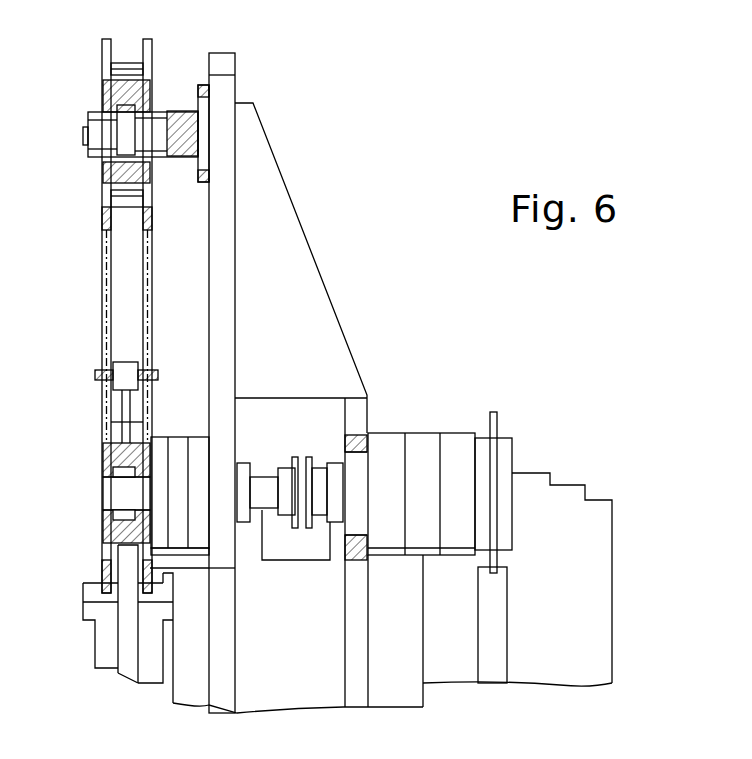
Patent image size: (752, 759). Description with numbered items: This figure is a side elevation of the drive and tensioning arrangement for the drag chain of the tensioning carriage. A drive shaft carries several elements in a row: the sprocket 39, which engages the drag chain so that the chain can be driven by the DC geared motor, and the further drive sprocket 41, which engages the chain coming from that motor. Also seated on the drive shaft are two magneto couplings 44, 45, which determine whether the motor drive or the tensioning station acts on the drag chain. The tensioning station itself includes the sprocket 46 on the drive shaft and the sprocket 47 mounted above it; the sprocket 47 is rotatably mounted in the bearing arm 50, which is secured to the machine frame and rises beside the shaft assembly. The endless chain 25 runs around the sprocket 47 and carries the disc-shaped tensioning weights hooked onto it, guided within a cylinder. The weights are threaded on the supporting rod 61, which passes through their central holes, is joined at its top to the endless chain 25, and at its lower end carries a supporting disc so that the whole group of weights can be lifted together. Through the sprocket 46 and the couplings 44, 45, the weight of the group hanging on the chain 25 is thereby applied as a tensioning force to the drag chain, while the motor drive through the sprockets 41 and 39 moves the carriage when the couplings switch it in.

The endless chain 25 is at (105, 296).
The sprocket 47 is at (108, 201).
The sprocket 46 is at (110, 422).
The magneto coupling 45 is at (180, 437).
The bearing arm 50 is at (291, 210).
The sprocket 39 is at (308, 457).
The magneto coupling 44 is at (430, 432).
The drive sprocket 41 is at (497, 425).
The supporting rod 61 is at (127, 652).